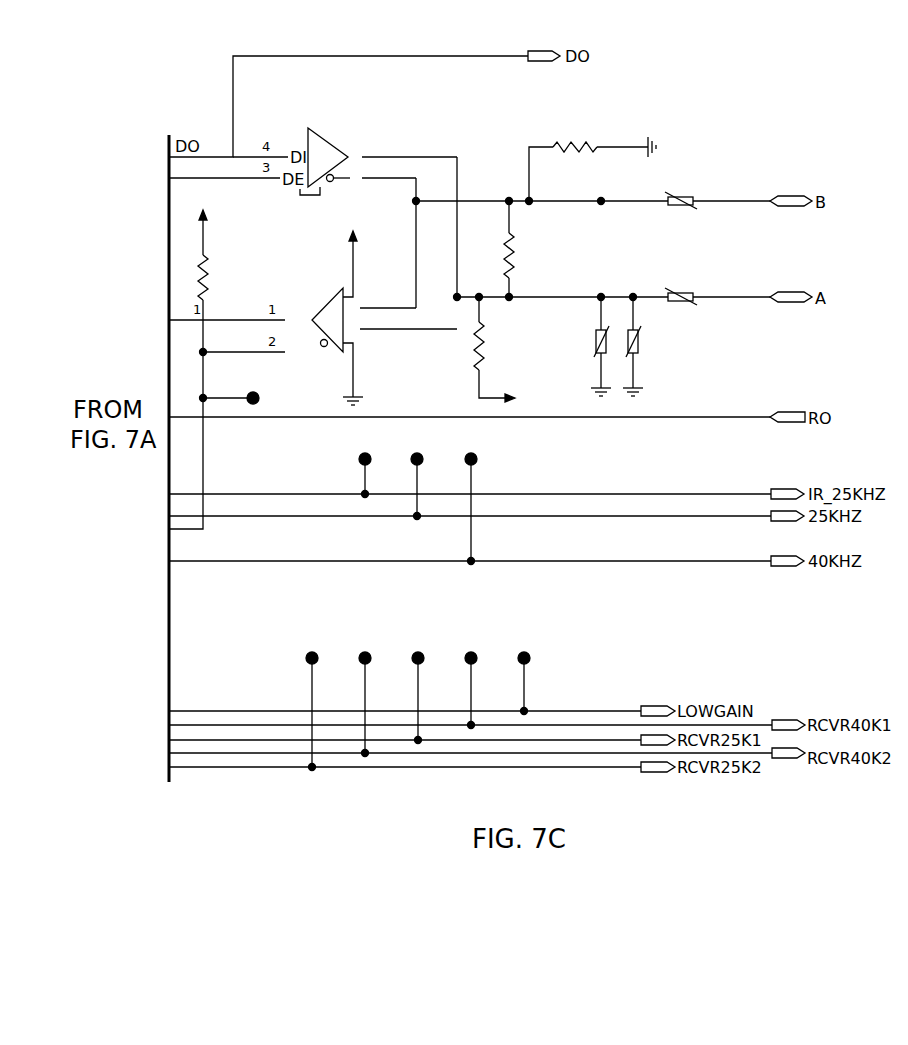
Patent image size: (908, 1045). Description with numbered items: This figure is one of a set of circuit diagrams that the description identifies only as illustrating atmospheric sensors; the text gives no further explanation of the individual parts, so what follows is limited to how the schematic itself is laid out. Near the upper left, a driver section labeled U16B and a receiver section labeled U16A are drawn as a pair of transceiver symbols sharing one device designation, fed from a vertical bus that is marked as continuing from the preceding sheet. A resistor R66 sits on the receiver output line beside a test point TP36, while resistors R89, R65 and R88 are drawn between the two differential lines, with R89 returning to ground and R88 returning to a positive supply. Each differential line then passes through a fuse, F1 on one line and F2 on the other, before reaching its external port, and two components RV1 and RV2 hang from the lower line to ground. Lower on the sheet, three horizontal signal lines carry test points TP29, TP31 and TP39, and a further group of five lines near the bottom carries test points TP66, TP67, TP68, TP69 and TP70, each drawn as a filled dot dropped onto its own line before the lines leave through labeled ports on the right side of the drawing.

The RS-485 transceiver driver LTC485 U16B is at (359, 141).
The RS-485 transceiver receiver LTC485 U16A is at (363, 309).
The resistor 5.1K R66 is at (208, 359).
The resistor 680 R89 is at (592, 154).
The resistor 510 R65 is at (526, 249).
The resistor 680 R88 is at (523, 352).
The fuse 140mA F1 is at (712, 199).
The fuse 140mA F2 is at (712, 295).
The transient voltage suppressor SMAJ8.5CA RV1 is at (579, 346).
The transient voltage suppressor SMAJ8.5CA RV2 is at (680, 346).
The test point TP36 is at (251, 394).
The test point TP29 is at (364, 465).
The test point TP31 is at (416, 476).
The test point TP39 is at (470, 498).
The test point TP66 is at (312, 701).
The test point TP67 is at (365, 694).
The test point TP68 is at (418, 687).
The test point TP69 is at (471, 680).
The test point TP70 is at (524, 673).